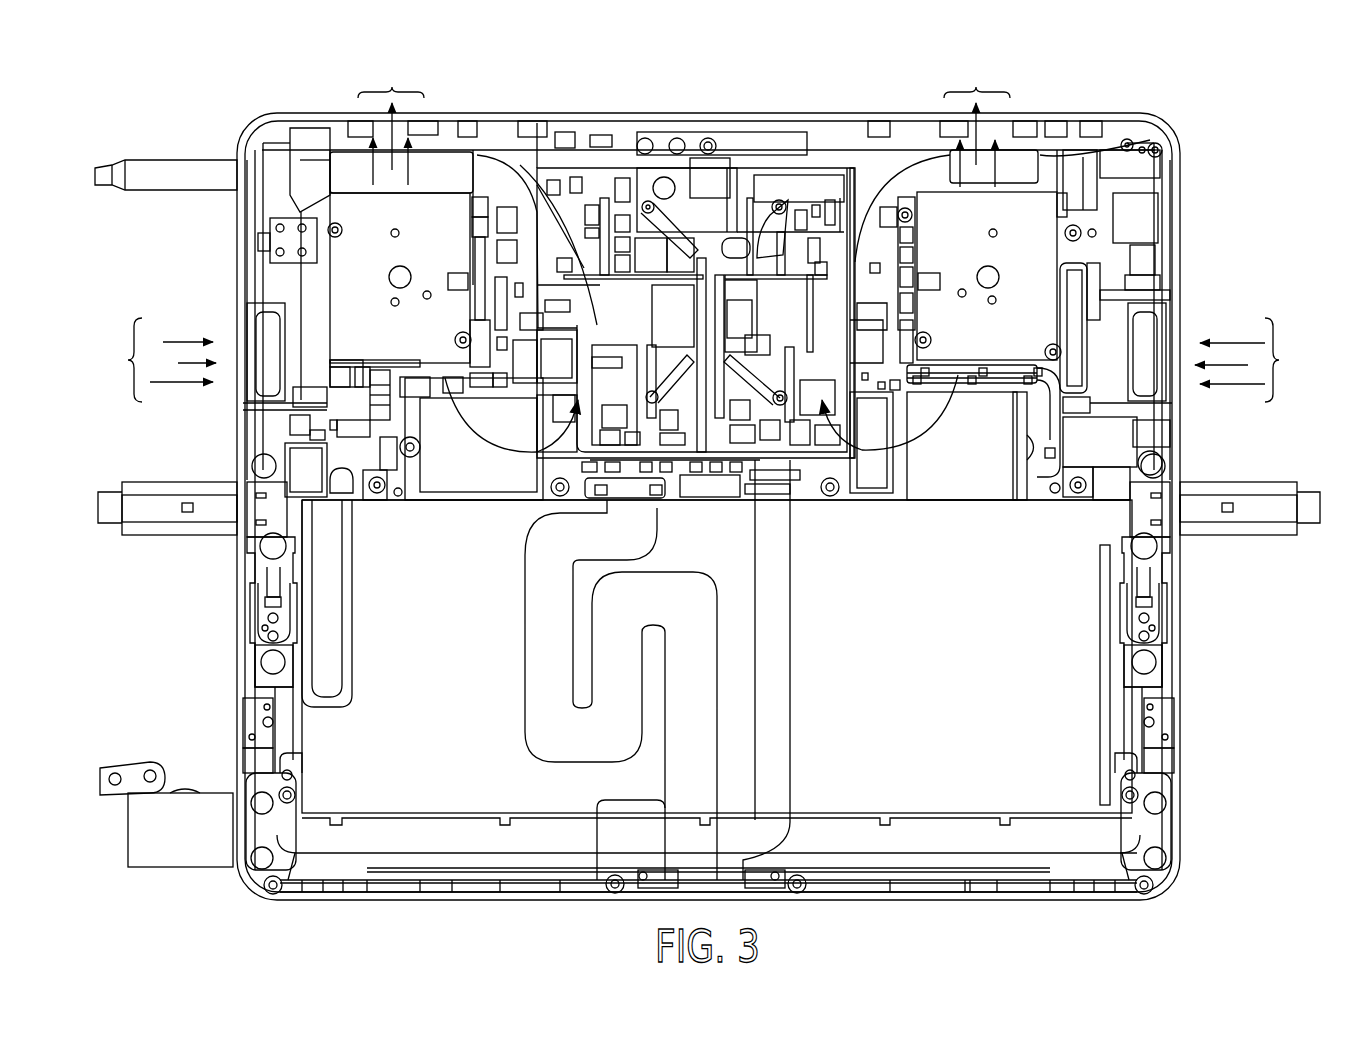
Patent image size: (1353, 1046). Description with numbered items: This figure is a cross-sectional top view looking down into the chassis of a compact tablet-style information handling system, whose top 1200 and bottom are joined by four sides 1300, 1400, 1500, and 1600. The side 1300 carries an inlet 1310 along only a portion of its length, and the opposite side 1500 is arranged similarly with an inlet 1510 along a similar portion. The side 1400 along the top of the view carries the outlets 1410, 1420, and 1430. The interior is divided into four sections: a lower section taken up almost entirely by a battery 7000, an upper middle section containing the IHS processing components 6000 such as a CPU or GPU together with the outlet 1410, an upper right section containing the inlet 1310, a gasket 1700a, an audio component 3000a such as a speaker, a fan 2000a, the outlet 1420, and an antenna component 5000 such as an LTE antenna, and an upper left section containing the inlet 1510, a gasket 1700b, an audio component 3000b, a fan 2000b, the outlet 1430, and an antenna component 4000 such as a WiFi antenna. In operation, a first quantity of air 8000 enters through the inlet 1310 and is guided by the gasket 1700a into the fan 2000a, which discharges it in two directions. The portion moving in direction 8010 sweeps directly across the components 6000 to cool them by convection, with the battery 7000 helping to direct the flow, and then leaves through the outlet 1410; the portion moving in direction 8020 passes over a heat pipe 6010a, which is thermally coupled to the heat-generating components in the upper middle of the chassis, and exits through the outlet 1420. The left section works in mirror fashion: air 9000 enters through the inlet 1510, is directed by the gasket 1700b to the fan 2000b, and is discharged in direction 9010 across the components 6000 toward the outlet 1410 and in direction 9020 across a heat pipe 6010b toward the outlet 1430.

The top 1200 is at (904, 699).
The side 1300 is at (1180, 267).
The inlet 1310 is at (1180, 310).
The side 1400 is at (857, 115).
The outlet 1410 is at (668, 117).
The outlet 1420 is at (1082, 113).
The outlet 1430 is at (437, 115).
The side 1500 is at (243, 290).
The inlet 1510 is at (248, 325).
The side 1600 is at (1108, 893).
The gasket 1700a is at (1112, 268).
The gasket 1700b is at (275, 280).
The fan 2000a is at (1045, 228).
The fan 2000b is at (460, 212).
The audio component 3000a is at (1150, 367).
The audio component 3000b is at (262, 370).
The antenna component 4000 is at (325, 128).
The antenna component 5000 is at (1012, 130).
The IHS processing components 6000 is at (710, 295).
The heat pipe 6010a is at (1012, 177).
The heat pipe 6010b is at (352, 170).
The battery 7000 is at (1100, 692).
The air 8000 is at (1261, 360).
The direction 8010 is at (965, 484).
The direction 8020 is at (977, 103).
The air 9000 is at (147, 360).
The direction 9010 is at (520, 452).
The direction 9020 is at (391, 106).